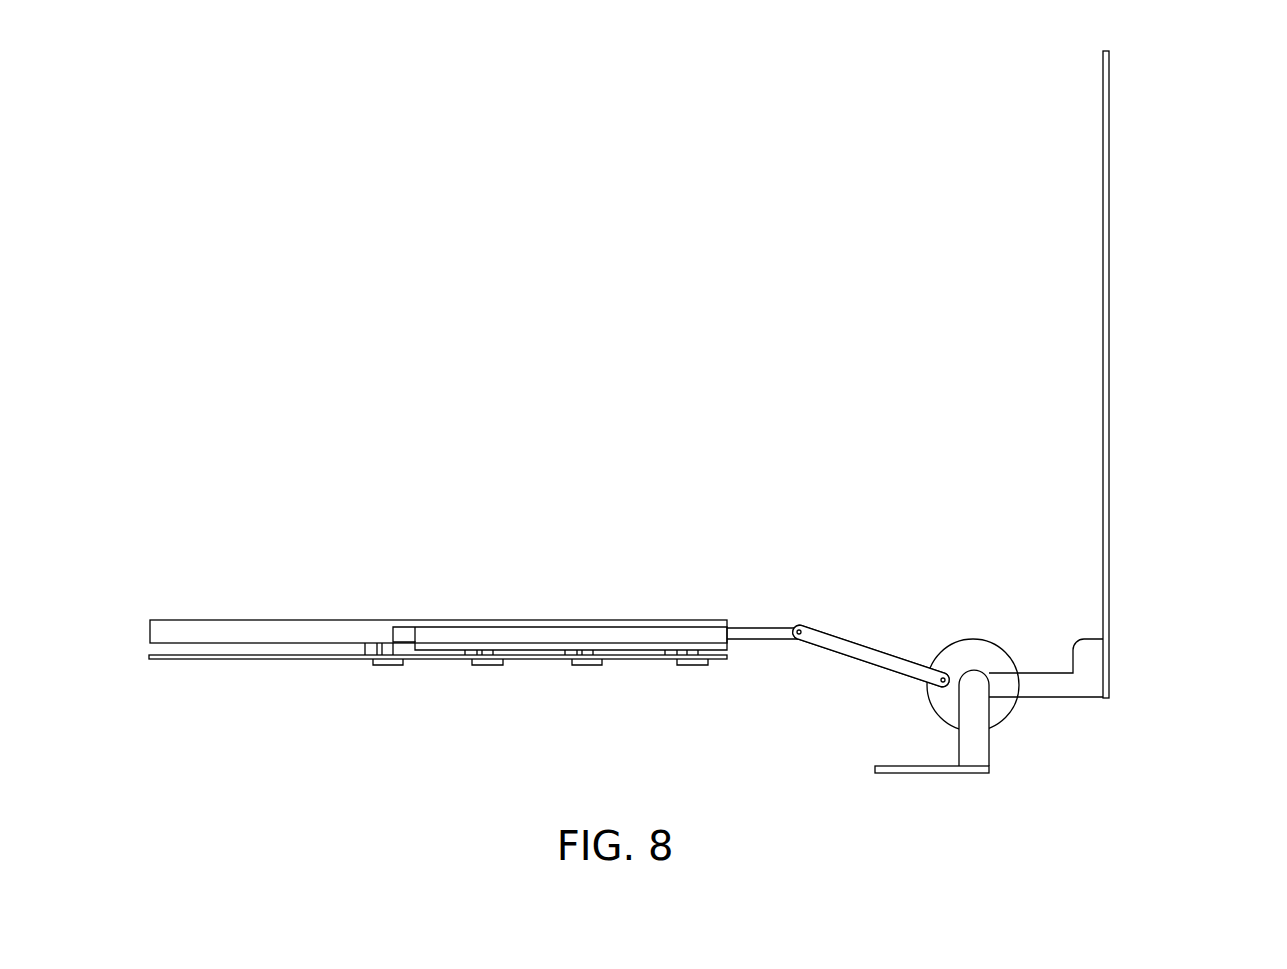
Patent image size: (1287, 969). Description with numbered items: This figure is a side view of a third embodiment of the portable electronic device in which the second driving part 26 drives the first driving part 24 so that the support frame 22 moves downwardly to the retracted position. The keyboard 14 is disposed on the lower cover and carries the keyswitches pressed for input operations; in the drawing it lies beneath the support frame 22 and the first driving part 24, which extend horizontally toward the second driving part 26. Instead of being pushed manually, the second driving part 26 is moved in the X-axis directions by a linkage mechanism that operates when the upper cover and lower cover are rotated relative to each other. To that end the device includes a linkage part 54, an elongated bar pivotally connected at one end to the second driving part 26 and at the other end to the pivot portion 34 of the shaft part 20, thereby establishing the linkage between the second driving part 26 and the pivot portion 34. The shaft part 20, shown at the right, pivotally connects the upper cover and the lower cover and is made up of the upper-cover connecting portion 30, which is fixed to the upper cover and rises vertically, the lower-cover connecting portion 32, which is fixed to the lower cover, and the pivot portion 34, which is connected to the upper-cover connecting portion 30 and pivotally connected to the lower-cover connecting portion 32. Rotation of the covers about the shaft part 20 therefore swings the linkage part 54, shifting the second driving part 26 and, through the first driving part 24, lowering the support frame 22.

The keyboard 14 is at (298, 658).
The support frame 22 is at (237, 628).
The first driving part 24 is at (560, 642).
The second driving part 26 is at (763, 625).
The linkage part 54 is at (877, 657).
The shaft part 20 is at (1028, 436).
The upper-cover connecting portion 30 is at (1109, 573).
The pivot portion 34 is at (993, 652).
The lower-cover connecting portion 32 is at (1036, 792).